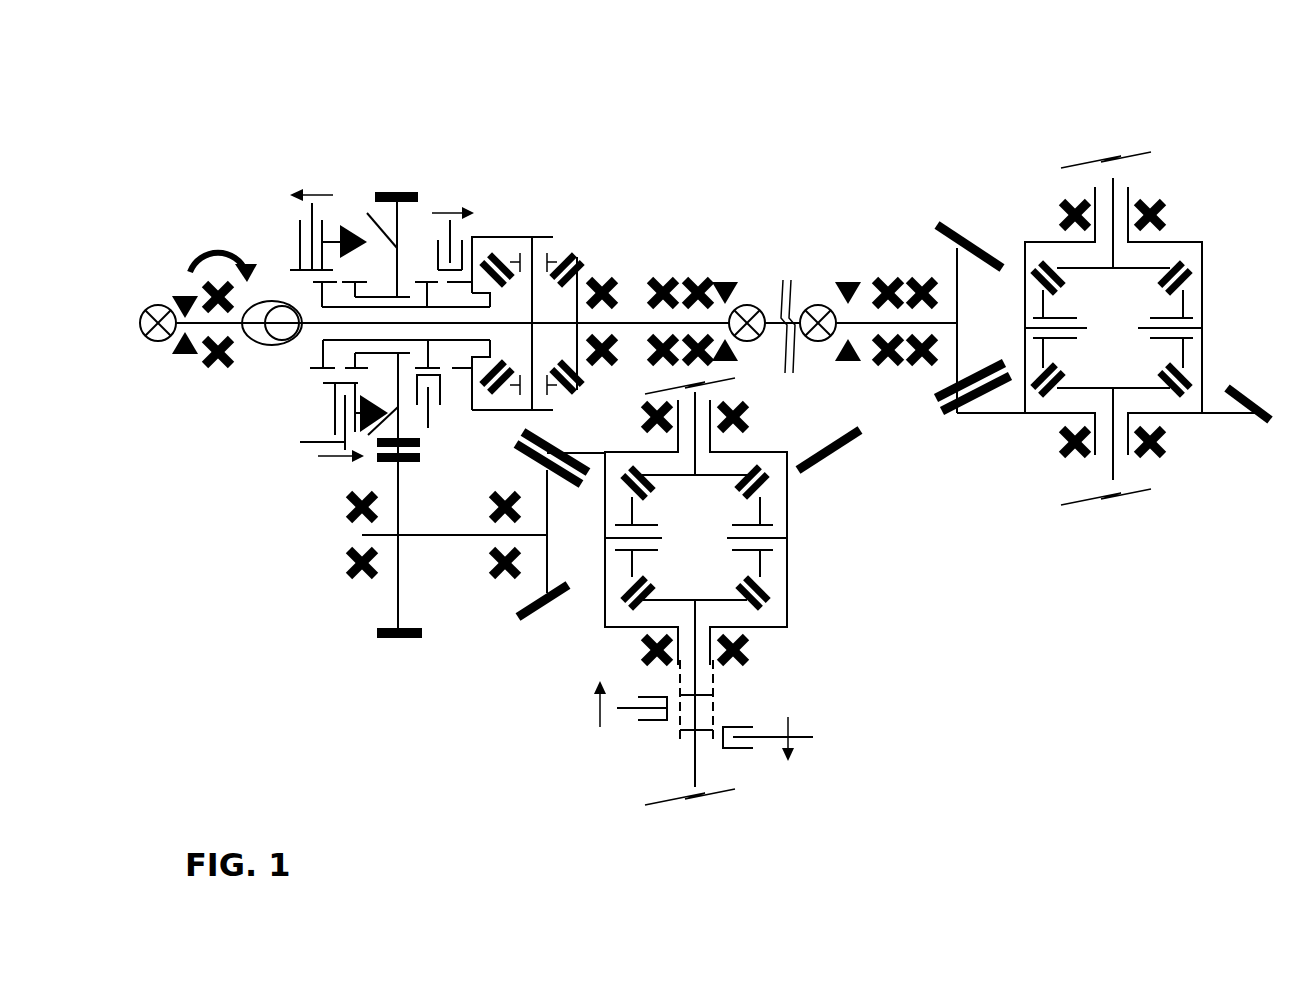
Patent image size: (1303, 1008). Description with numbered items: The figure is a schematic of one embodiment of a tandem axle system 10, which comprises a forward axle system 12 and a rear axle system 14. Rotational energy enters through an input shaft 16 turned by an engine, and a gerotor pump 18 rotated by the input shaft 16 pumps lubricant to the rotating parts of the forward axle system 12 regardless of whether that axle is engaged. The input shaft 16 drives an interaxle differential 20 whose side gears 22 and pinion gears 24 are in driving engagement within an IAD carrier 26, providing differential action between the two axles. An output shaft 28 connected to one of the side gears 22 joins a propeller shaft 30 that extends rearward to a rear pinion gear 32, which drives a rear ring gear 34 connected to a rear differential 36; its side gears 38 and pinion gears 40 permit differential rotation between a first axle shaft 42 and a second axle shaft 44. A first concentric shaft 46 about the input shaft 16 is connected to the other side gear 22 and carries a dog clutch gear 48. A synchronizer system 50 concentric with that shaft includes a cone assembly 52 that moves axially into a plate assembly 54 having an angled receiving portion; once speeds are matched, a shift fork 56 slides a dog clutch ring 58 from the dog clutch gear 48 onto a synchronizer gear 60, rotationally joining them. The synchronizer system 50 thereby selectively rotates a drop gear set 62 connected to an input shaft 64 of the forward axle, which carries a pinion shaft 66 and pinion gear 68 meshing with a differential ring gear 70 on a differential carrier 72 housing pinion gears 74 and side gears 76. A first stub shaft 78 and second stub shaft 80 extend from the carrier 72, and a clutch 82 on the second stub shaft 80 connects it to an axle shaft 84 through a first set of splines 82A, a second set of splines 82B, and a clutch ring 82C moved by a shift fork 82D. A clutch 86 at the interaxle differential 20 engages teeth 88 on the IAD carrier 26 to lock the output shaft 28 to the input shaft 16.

The tandem axle system 10 is at (705, 215).
The forward axle system 12 is at (890, 650).
The rear axle system 14 is at (1130, 105).
The input shaft 16 is at (242, 320).
The gerotor pump 18 is at (262, 350).
The interaxle differential 20 is at (550, 287).
The side gears 22 is at (595, 260).
The pinion gears 24 is at (570, 262).
The IAD carrier 26 is at (545, 245).
The output shaft 28 is at (630, 322).
The propeller shaft 30 is at (750, 304).
The rear pinion gear 32 is at (960, 320).
The rear ring gear 34 is at (993, 418).
The rear differential 36 is at (1147, 321).
The side gears 38 is at (1172, 268).
The pinion gears 40 is at (1188, 283).
The first axle shaft 42 is at (1118, 182).
The second axle shaft 44 is at (1113, 476).
The first concentric shaft 46 is at (323, 342).
The dog clutch gear 48 is at (422, 282).
The synchronizer system 50 is at (381, 237).
The cone assembly 52 is at (345, 212).
The plate assembly 54 is at (414, 222).
The shift fork 56 is at (320, 445).
The dog clutch ring 58 is at (323, 385).
The synchronizer gear 60 is at (362, 282).
The drop gear set 62 is at (362, 476).
The input shaft 64 is at (447, 538).
The pinion shaft 66 is at (537, 533).
The pinion gear 68 is at (548, 558).
The differential ring gear 70 is at (855, 450).
The differential carrier 72 is at (720, 532).
The pinion gears 74 is at (765, 490).
The side gears 76 is at (752, 462).
The first stub shaft 78 is at (700, 395).
The second stub shaft 80 is at (700, 612).
The clutch 82 is at (696, 741).
The first set of splines or gears 82A is at (713, 690).
The second set of splines or gears 82B is at (713, 722).
The clutch ring 82C is at (750, 748).
The shift fork 82D is at (791, 739).
The axle shaft 84 is at (694, 765).
The clutch 86 is at (484, 208).
The teeth 88 is at (460, 372).